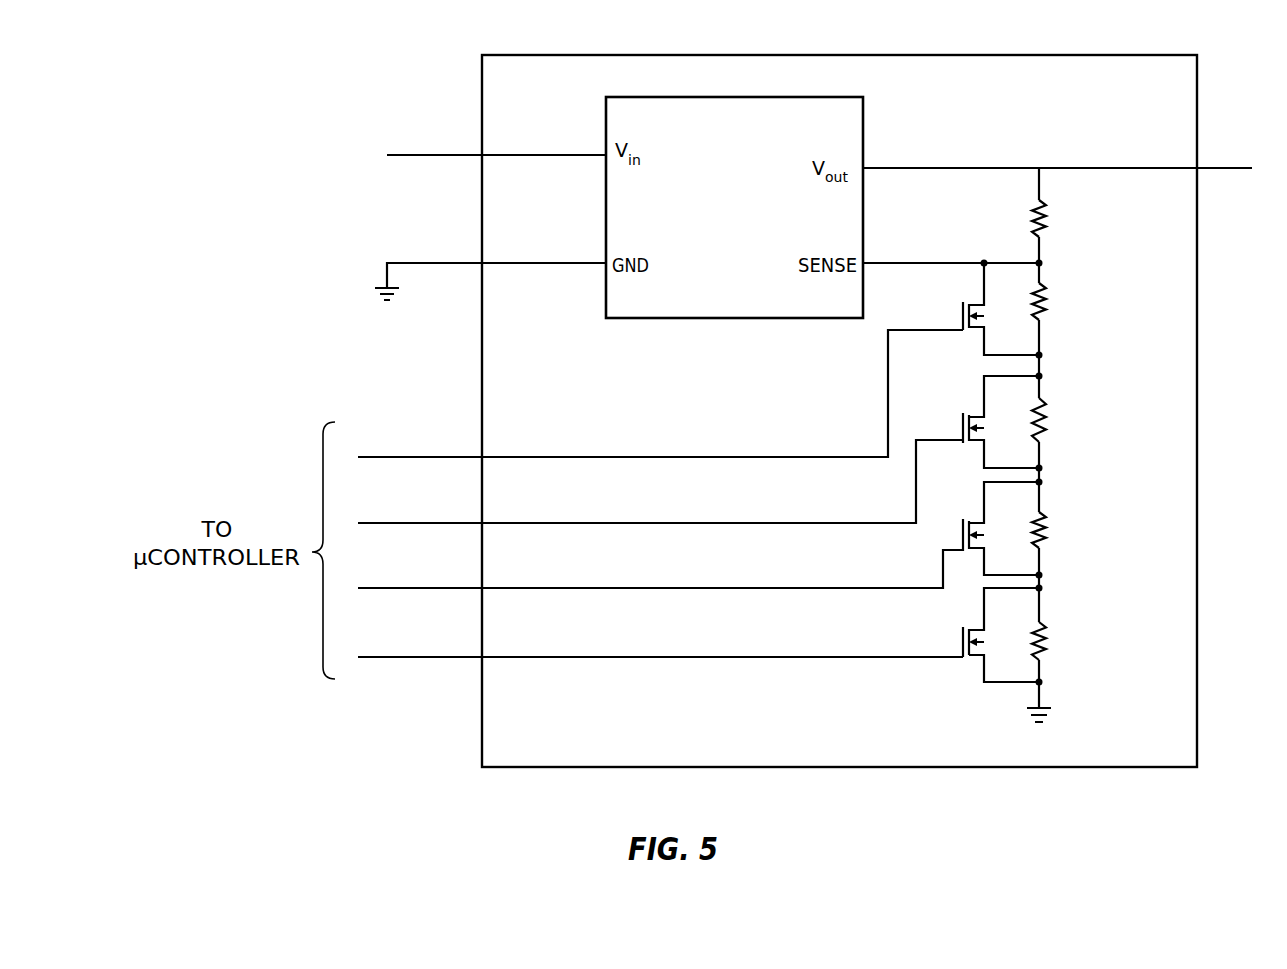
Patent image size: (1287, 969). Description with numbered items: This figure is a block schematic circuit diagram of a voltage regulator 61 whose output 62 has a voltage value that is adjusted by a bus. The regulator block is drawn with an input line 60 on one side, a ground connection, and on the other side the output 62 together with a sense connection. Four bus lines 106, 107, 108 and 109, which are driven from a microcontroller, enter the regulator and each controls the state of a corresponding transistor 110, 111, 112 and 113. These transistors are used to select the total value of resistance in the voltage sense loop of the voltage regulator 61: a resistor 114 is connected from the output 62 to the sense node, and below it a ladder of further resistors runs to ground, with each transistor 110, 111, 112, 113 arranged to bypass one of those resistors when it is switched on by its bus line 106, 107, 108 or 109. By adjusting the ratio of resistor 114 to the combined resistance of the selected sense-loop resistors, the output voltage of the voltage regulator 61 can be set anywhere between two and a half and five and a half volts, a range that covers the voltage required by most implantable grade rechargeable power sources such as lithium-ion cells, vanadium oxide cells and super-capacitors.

The input voltage line (Vin) 60 is at (424, 154).
The voltage regulator 61 is at (938, 769).
The output 62 is at (1230, 168).
The bus line 106 is at (446, 656).
The bus line 107 is at (446, 587).
The bus line 108 is at (446, 522).
The bus line 109 is at (446, 456).
The transistor 110 is at (953, 642).
The transistor 111 is at (953, 533).
The transistor 112 is at (953, 418).
The transistor 113 is at (953, 307).
The resistor 114 is at (1046, 209).